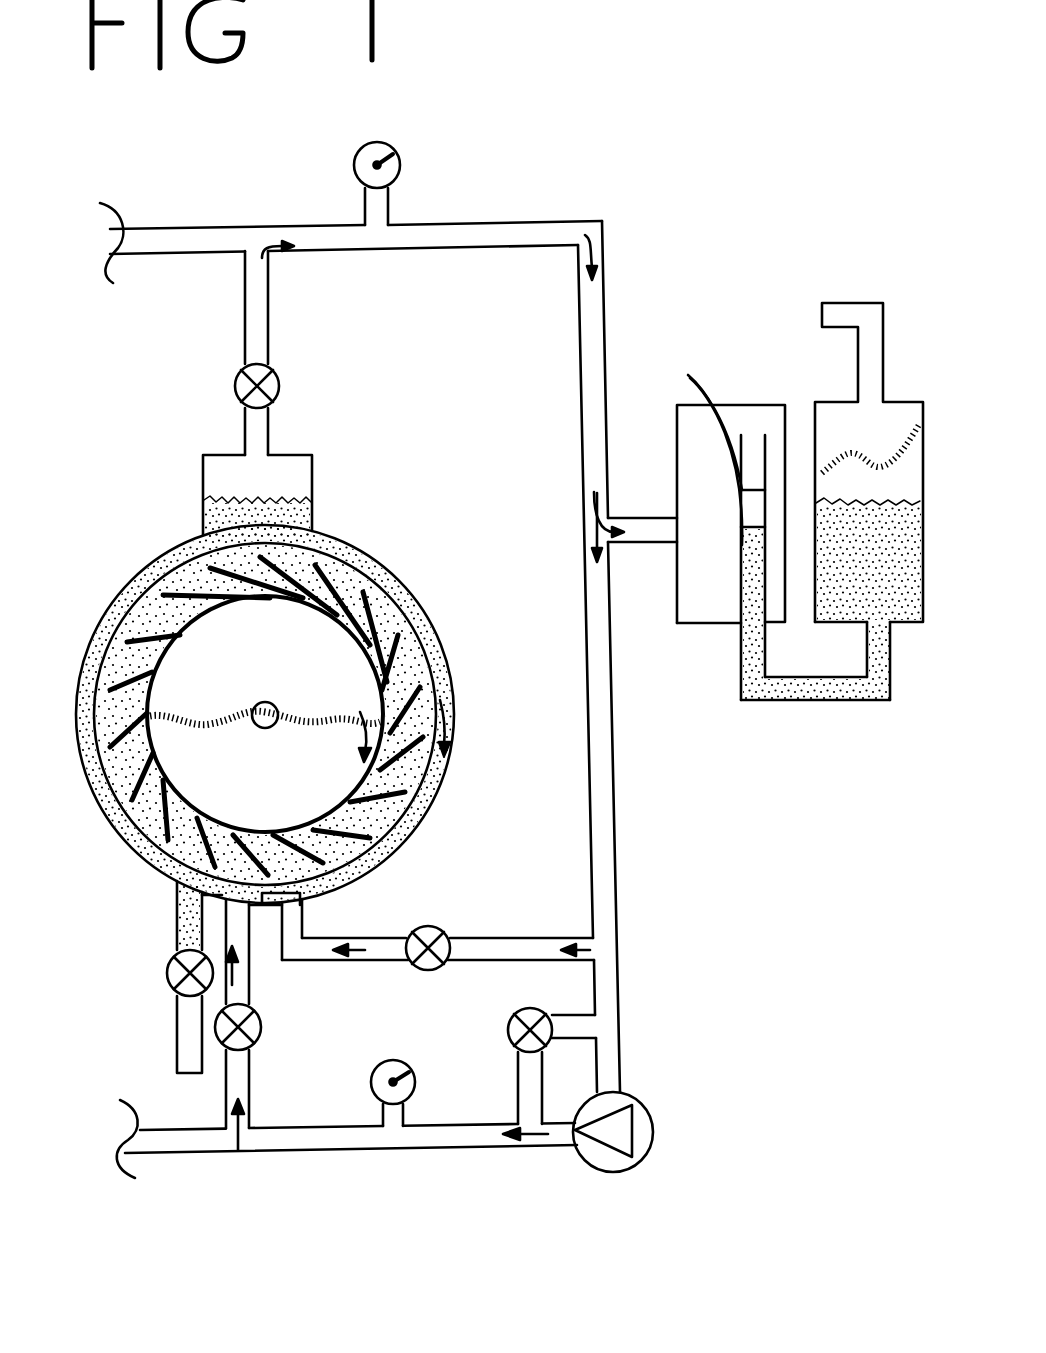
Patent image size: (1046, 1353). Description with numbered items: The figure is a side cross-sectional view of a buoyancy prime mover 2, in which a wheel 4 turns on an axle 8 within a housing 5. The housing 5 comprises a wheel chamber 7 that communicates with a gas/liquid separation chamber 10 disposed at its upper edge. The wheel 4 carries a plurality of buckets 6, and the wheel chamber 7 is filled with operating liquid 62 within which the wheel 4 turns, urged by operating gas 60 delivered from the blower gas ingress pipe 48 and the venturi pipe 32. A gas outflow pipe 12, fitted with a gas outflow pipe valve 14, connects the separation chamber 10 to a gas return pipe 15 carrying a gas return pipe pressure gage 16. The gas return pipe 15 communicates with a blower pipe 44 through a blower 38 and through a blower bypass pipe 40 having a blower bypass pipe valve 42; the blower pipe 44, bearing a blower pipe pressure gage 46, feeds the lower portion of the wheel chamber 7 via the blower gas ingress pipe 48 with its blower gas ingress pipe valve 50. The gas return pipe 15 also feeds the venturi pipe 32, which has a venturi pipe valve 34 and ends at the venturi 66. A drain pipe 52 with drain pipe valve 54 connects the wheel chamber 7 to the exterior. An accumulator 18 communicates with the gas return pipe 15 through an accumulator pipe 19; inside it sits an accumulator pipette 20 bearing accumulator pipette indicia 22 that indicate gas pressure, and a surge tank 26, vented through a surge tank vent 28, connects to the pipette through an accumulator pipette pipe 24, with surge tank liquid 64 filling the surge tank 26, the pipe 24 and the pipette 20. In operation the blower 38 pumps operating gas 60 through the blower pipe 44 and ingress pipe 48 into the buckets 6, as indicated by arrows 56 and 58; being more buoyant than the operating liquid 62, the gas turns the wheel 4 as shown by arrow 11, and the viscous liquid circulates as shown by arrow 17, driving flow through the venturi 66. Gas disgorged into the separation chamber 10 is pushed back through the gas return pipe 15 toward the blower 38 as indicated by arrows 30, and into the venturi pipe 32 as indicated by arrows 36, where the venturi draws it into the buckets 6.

The buoyancy prime mover 2 is at (766, 130).
The wheel 4 is at (370, 782).
The housing 5 is at (438, 624).
The buckets 6 is at (372, 586).
The wheel chamber 7 is at (128, 828).
The axle 8 is at (264, 730).
The gas/liquid separation chamber 10 is at (313, 470).
The arrow 11 is at (366, 712).
The gas outflow pipe 12 is at (244, 318).
The gas outflow pipe valve 14 is at (235, 386).
The gas return pipe 15 is at (470, 222).
The gas return pipe pressure gage 16 is at (388, 142).
The arrow 17 is at (446, 708).
The accumulator 18 is at (732, 404).
The accumulator pipe 19 is at (636, 546).
The accumulator pipette 20 is at (740, 633).
The accumulator pipette indicia 22 is at (688, 374).
The accumulator pipette pipe 24 is at (800, 702).
The surge tank 26 is at (838, 624).
The surge tank vent 28 is at (848, 302).
The arrows 30 is at (262, 242).
The venturi pipe 32 is at (512, 935).
The venturi pipe valve 34 is at (442, 932).
The arrows 36 is at (362, 944).
The blower 38 is at (648, 1160).
The blower bypass pipe 40 is at (517, 1077).
The blower bypass pipe valve 42 is at (508, 1024).
The blower pipe 44 is at (360, 1147).
The blower pipe pressure gage 46 is at (388, 1062).
The blower gas ingress pipe 48 is at (225, 1090).
The blower gas ingress pipe valve 50 is at (262, 1025).
The drain pipe 52 is at (176, 937).
The drain pipe valve 54 is at (167, 978).
The arrow 56 is at (528, 1147).
The arrow 58 is at (234, 974).
The operating gas 60 is at (118, 718).
The operating liquid 62 is at (168, 556).
The surge tank liquid 64 is at (908, 600).
The venturi 66 is at (300, 895).